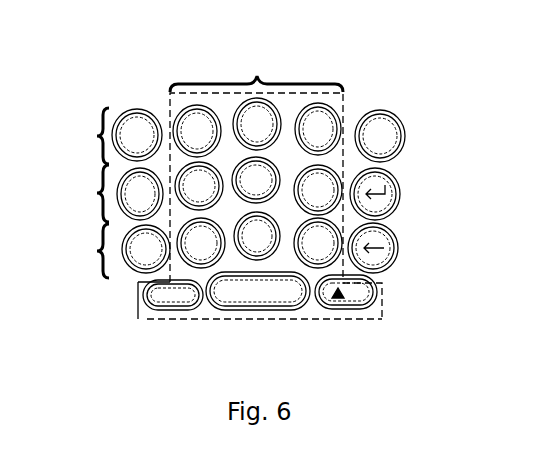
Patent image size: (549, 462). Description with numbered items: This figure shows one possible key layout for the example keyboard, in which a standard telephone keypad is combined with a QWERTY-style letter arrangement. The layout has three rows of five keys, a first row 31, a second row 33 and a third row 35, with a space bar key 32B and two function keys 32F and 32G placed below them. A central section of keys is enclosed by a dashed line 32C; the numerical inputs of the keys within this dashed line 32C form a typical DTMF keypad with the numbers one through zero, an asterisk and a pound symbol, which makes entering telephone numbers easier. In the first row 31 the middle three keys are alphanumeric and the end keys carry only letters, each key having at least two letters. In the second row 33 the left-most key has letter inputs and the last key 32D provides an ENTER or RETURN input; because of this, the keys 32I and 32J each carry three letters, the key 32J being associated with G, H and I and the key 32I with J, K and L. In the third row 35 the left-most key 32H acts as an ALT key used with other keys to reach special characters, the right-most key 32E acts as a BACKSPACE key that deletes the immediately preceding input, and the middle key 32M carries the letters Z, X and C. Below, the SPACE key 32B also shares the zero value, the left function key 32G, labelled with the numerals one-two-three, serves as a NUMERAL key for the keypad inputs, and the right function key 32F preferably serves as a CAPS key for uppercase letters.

The first row 31 is at (83, 136).
The second row 33 is at (83, 193).
The third row 35 is at (83, 251).
The space bar key 32B is at (264, 311).
The dashed line 32C is at (257, 77).
The ENTER key 32D is at (401, 190).
The BACKSPACE key 32E is at (399, 253).
The right function key 32F is at (382, 283).
The left function key 32G is at (138, 282).
The ALT key 32H is at (138, 262).
The alphanumeric key 32I is at (277, 155).
The alphanumeric key 32J is at (335, 160).
The alphanumeric key 32M is at (168, 140).